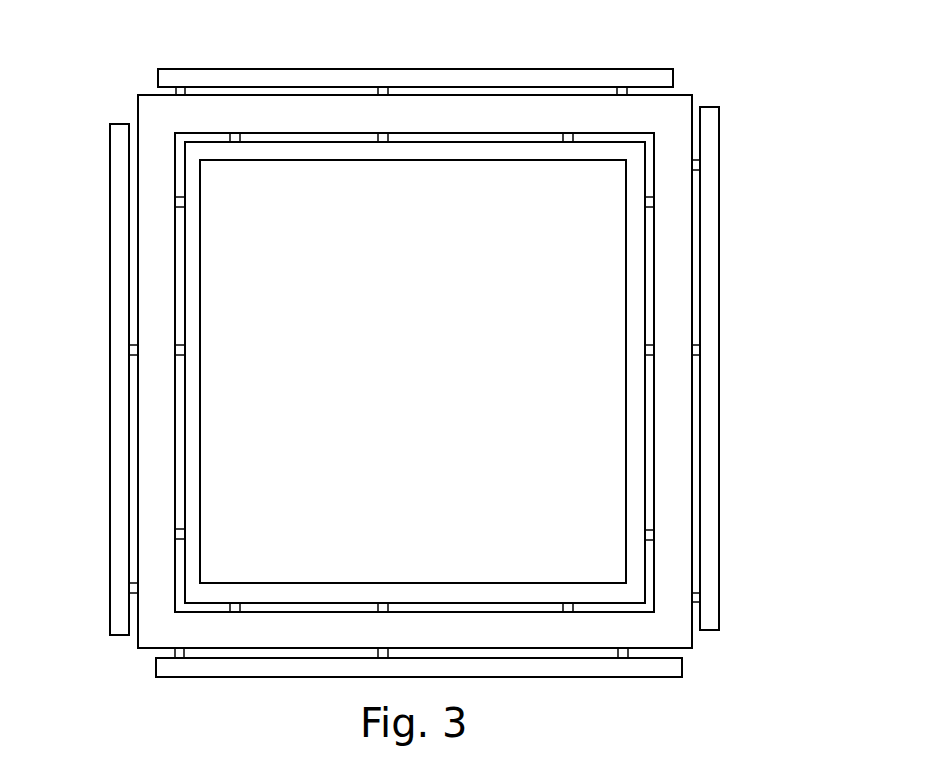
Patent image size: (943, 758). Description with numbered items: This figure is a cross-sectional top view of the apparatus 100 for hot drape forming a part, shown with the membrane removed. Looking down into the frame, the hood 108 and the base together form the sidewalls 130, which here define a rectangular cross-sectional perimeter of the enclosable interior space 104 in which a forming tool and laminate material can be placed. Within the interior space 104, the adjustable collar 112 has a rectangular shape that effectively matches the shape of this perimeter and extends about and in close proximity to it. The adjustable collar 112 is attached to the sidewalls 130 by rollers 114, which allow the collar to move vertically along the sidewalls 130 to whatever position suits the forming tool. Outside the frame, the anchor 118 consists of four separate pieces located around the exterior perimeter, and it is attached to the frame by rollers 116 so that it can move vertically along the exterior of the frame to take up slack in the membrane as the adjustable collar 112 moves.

The apparatus 100 is at (731, 72).
The interior space 104 is at (425, 327).
The hood 108 is at (157, 277).
The adjustable collar 112 is at (190, 252).
The rollers 114 is at (178, 350).
The rollers 116 is at (178, 90).
The anchor 118 is at (543, 80).
The sidewalls 130 is at (184, 164).